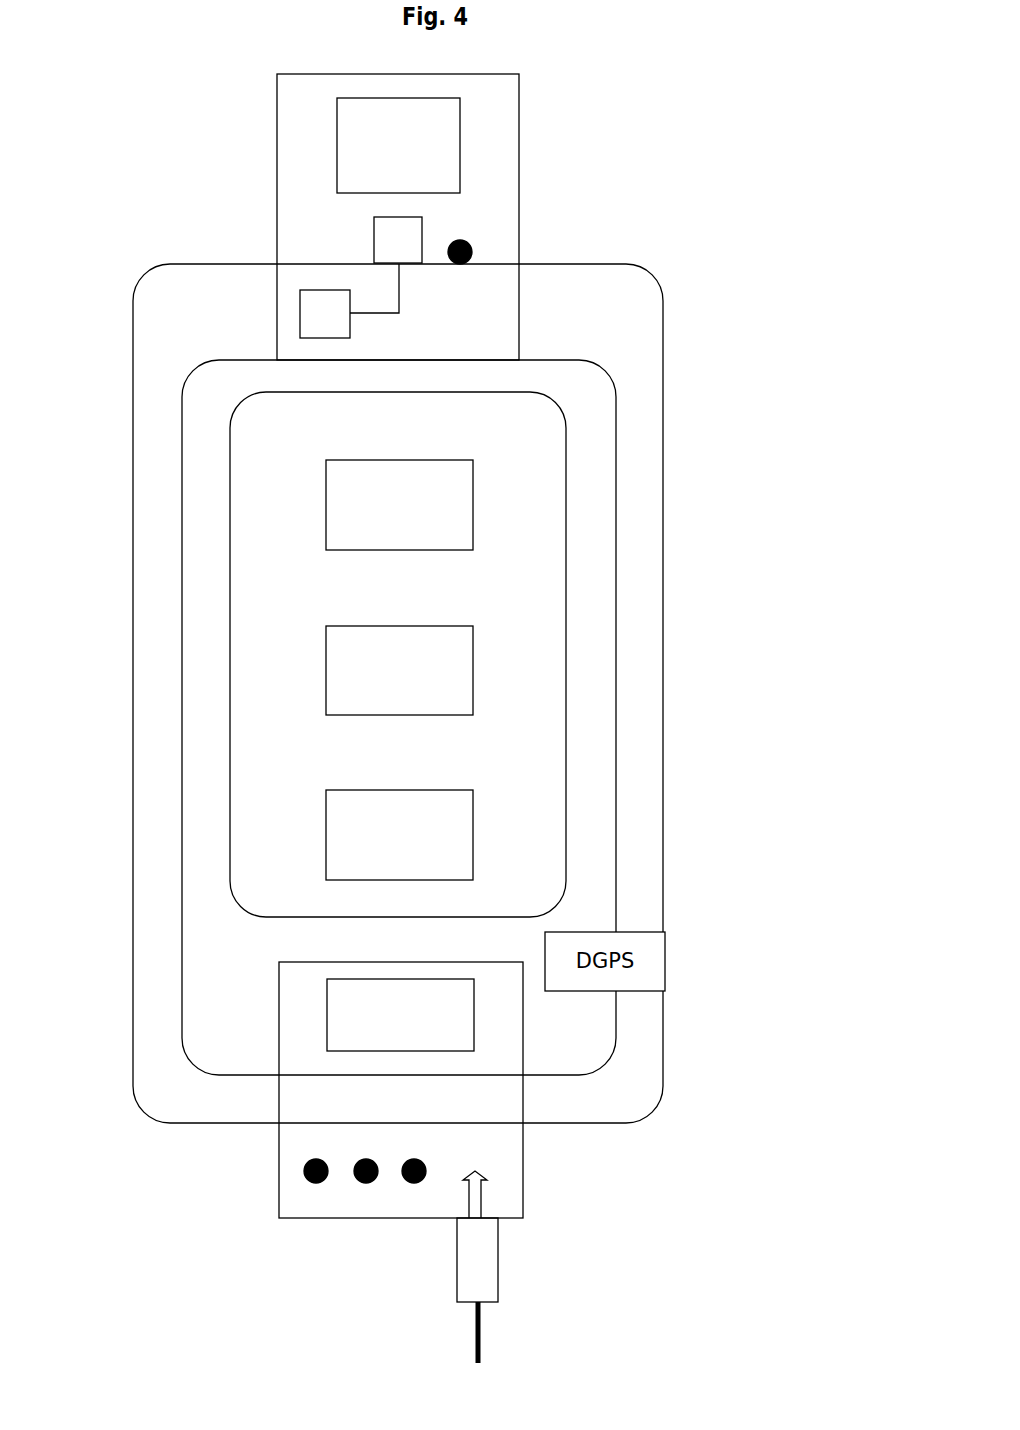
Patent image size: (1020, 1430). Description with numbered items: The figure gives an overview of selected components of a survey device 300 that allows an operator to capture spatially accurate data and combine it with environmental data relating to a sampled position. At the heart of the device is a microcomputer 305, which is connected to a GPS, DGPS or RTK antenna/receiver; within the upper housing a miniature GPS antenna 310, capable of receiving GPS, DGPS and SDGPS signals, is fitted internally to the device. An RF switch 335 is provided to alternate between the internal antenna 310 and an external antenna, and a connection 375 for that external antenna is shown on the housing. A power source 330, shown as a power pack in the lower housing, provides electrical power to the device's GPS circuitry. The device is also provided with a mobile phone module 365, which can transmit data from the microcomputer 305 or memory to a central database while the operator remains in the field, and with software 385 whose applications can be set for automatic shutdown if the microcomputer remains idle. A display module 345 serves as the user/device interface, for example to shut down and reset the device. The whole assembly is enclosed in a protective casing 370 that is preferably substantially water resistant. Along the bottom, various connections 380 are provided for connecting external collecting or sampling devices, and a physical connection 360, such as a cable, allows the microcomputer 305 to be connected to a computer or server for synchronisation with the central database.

The survey device 300 is at (686, 171).
The microcomputer 305 is at (474, 507).
The miniature GPS antenna 310 is at (337, 145).
The power source 330 is at (474, 1013).
The RF switch 335 is at (300, 312).
The display module 345 is at (255, 548).
The physical connection 360 is at (498, 1258).
The mobile phone module 365 is at (474, 671).
The protective casing 370 is at (663, 380).
The connection for external antenna 375 is at (466, 262).
The connections for external devices 380 is at (413, 1183).
The software 385 is at (474, 835).